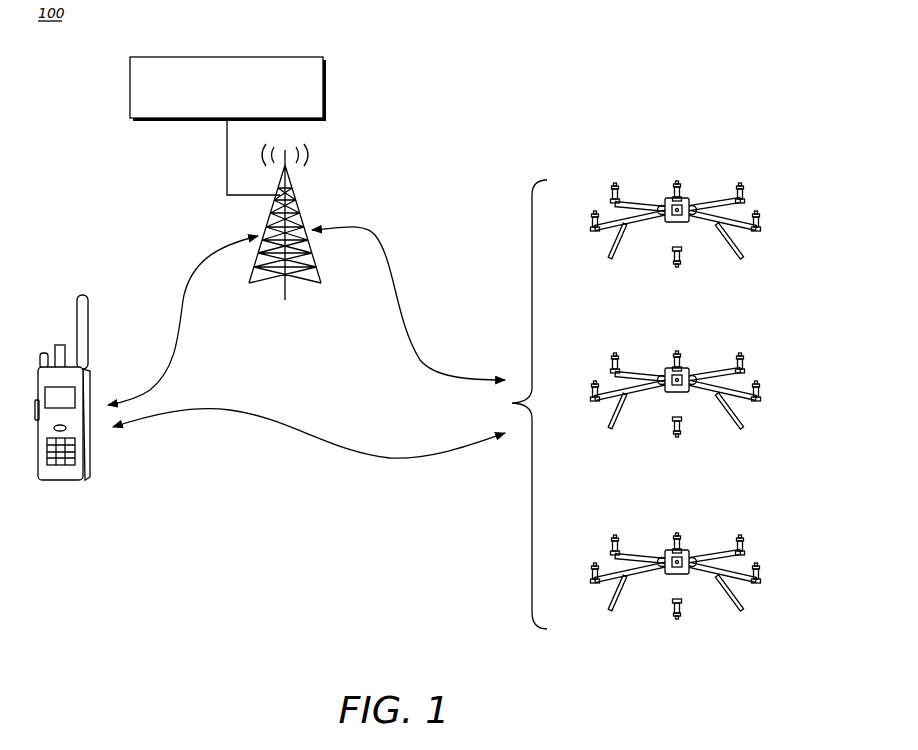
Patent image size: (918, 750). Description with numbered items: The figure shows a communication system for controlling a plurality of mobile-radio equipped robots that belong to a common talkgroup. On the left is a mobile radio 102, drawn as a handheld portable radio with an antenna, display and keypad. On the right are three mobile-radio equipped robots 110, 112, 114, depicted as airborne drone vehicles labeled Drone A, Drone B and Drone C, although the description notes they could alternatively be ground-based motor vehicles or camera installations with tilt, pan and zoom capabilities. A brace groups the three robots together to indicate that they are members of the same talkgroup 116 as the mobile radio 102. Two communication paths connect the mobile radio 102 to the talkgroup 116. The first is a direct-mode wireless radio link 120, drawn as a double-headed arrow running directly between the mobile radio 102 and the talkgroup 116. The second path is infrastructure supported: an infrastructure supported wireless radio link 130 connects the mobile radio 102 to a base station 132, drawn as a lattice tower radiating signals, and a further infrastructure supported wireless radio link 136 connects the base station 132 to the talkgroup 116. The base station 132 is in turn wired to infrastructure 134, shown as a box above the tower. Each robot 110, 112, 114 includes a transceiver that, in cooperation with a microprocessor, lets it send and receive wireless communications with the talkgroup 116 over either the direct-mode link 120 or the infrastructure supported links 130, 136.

The mobile radio 102 is at (85, 468).
The mobile-radio equipped robot 110 is at (772, 216).
The mobile-radio equipped robot 112 is at (772, 386).
The mobile-radio equipped robot 114 is at (772, 569).
The talkgroup 116 is at (532, 558).
The direct-mode wireless radio link 120 is at (268, 413).
The infrastructure supported wireless radio link 130 is at (190, 268).
The base station 132 is at (296, 201).
The infrastructure 134 is at (228, 57).
The infrastructure supported wireless radio link 136 is at (376, 230).